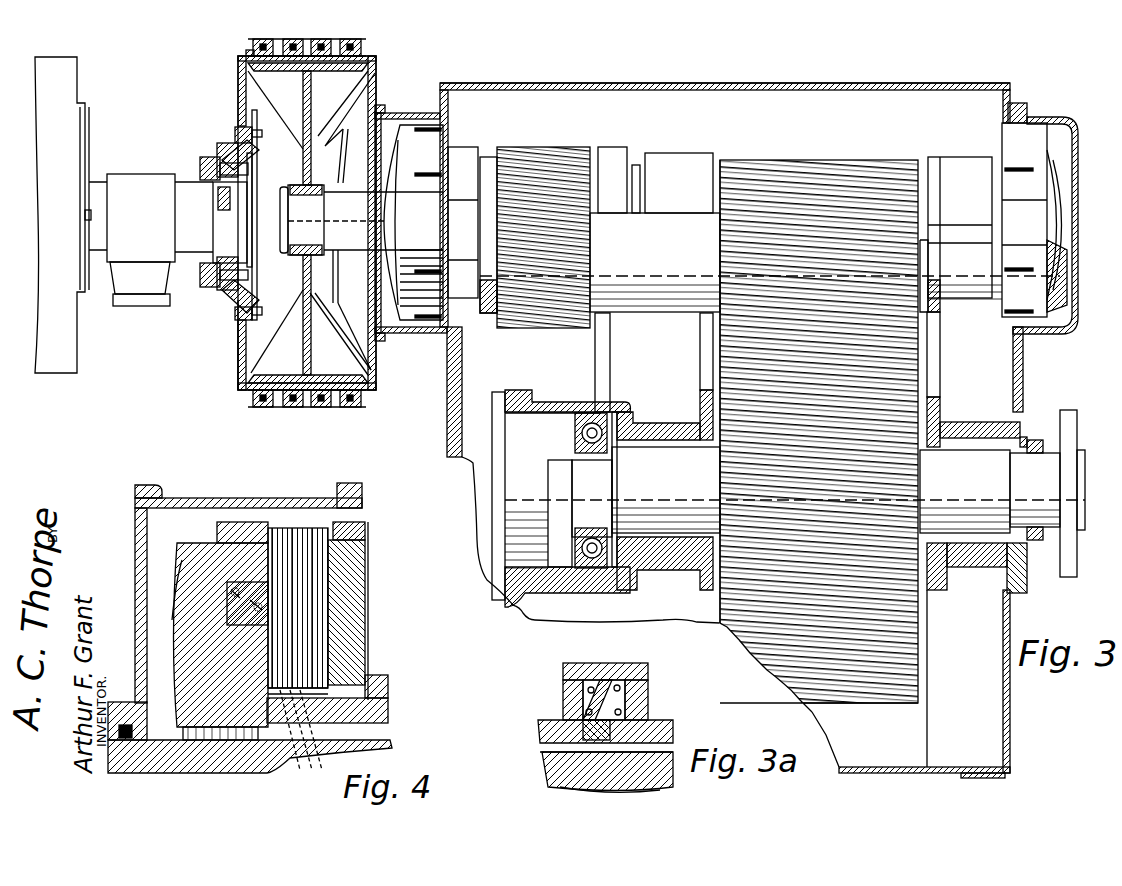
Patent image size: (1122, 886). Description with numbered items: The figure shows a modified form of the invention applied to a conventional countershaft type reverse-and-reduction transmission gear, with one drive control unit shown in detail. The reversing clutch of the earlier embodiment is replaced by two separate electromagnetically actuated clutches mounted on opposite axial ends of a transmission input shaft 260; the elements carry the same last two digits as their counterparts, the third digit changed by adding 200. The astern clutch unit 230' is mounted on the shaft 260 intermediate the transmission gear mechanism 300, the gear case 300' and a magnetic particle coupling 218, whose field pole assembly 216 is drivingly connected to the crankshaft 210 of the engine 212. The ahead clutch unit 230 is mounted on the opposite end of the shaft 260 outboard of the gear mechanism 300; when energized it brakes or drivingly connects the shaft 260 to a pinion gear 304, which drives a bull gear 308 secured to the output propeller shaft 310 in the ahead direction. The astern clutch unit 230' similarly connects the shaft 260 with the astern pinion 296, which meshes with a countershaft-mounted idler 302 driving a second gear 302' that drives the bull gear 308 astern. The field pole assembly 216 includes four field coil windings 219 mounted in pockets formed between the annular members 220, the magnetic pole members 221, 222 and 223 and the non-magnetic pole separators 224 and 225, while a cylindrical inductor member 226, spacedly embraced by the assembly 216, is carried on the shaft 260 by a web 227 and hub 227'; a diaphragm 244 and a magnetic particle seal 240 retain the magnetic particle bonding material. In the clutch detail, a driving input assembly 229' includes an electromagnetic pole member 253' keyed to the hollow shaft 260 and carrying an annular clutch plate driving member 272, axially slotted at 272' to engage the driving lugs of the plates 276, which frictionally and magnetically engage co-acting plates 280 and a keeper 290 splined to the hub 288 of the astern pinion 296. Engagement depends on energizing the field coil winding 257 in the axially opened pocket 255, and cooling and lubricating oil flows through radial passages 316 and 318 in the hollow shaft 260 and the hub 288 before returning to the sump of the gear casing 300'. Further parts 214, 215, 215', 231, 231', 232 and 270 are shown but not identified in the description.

In FIG. 3, the spacer ring 200 is at (637, 167).
In FIG. 3, the crankshaft 210 is at (94, 186).
In FIG. 3, the engine 212 is at (68, 80).
In FIG. 3, the mounting plate 214 is at (149, 307).
In FIG. 3, the hub 215 is at (285, 220).
In FIG. 3, the housing wall 215' is at (212, 345).
In FIG. 3, the field pole assembly 216 is at (367, 42).
In FIG. 3, the magnetic particle coupling 218 is at (236, 84).
In FIG. 3, the field coil windings 219 is at (253, 398).
In FIG. 3A, the field coil windings 219 is at (615, 683).
In FIG. 3, the annular members 220 is at (270, 408).
In FIG. 3A, the annular members 220 is at (573, 677).
In FIG. 3, the magnetic pole member 221 is at (248, 55).
In FIG. 3, the magnetic pole member 222 is at (336, 39).
In FIG. 3A, the magnetic pole member 222 is at (655, 728).
In FIG. 3, the magnetic pole member 223 is at (377, 59).
In FIG. 3, the non-magnetic pole separator 224 is at (268, 375).
In FIG. 3A, the non-magnetic pole separator 224 is at (597, 730).
In FIG. 3, the non-magnetic pole separator 225 is at (322, 375).
In FIG. 3, the cylindrical inductor member 226 is at (345, 78).
In FIG. 3A, the cylindrical inductor member 226 is at (557, 771).
In FIG. 3, the web 227 is at (286, 128).
In FIG. 3, the hub 227' is at (285, 315).
In FIG. 4, the driving input assembly 229' is at (141, 746).
In FIG. 3, the ahead clutch unit 230 is at (1059, 220).
In FIG. 3, the astern clutch unit 230' is at (481, 208).
In FIG. 4, the astern clutch unit 230' is at (205, 589).
In FIG. 3, the end cover 231 is at (1063, 244).
In FIG. 3, the clutch housing 231' is at (411, 206).
In FIG. 4, the clutch housing 231' is at (248, 581).
In FIG. 3, the hub flange 232 is at (224, 142).
In FIG. 3, the magnetic particle seal 240 is at (345, 128).
In FIG. 3, the diaphragm 244 is at (364, 355).
In FIG. 4, the electromagnetic pole member 253' is at (143, 590).
In FIG. 4, the groove or pocket 255 is at (232, 620).
In FIG. 4, the field coil winding 257 is at (232, 600).
In FIG. 3, the transmission input shaft 260 is at (367, 209).
In FIG. 4, the transmission input shaft 260 is at (390, 750).
In FIG. 3, the collar 270 is at (1012, 140).
In FIG. 3, the annular clutch plate driving member 272 is at (437, 169).
In FIG. 4, the annular clutch plate driving member 272 is at (297, 573).
In FIG. 3, the axial slots 272' is at (722, 227).
In FIG. 4, the axial slots 272' is at (381, 569).
In FIG. 4, the plates 276 is at (300, 538).
In FIG. 4, the co-acting plates 280 is at (308, 662).
In FIG. 4, the hub 288 is at (388, 712).
In FIG. 4, the keeper 290 is at (345, 598).
In FIG. 3, the astern pinion 296 is at (548, 147).
In FIG. 3, the transmission gear mechanism 300 is at (733, 413).
In FIG. 3, the gear case 300' is at (725, 63).
In FIG. 4, the gear case 300' is at (378, 483).
In FIG. 3, the countershaft-mounted idler 302 is at (512, 250).
In FIG. 3, the second gear 302' is at (770, 262).
In FIG. 3, the pinion gear 304 is at (832, 160).
In FIG. 3, the bull gear 308 is at (917, 622).
In FIG. 3, the output propeller shaft 310 is at (1055, 468).
In FIG. 4, the radial passage 316 is at (240, 778).
In FIG. 4, the radial passage 318 is at (300, 762).